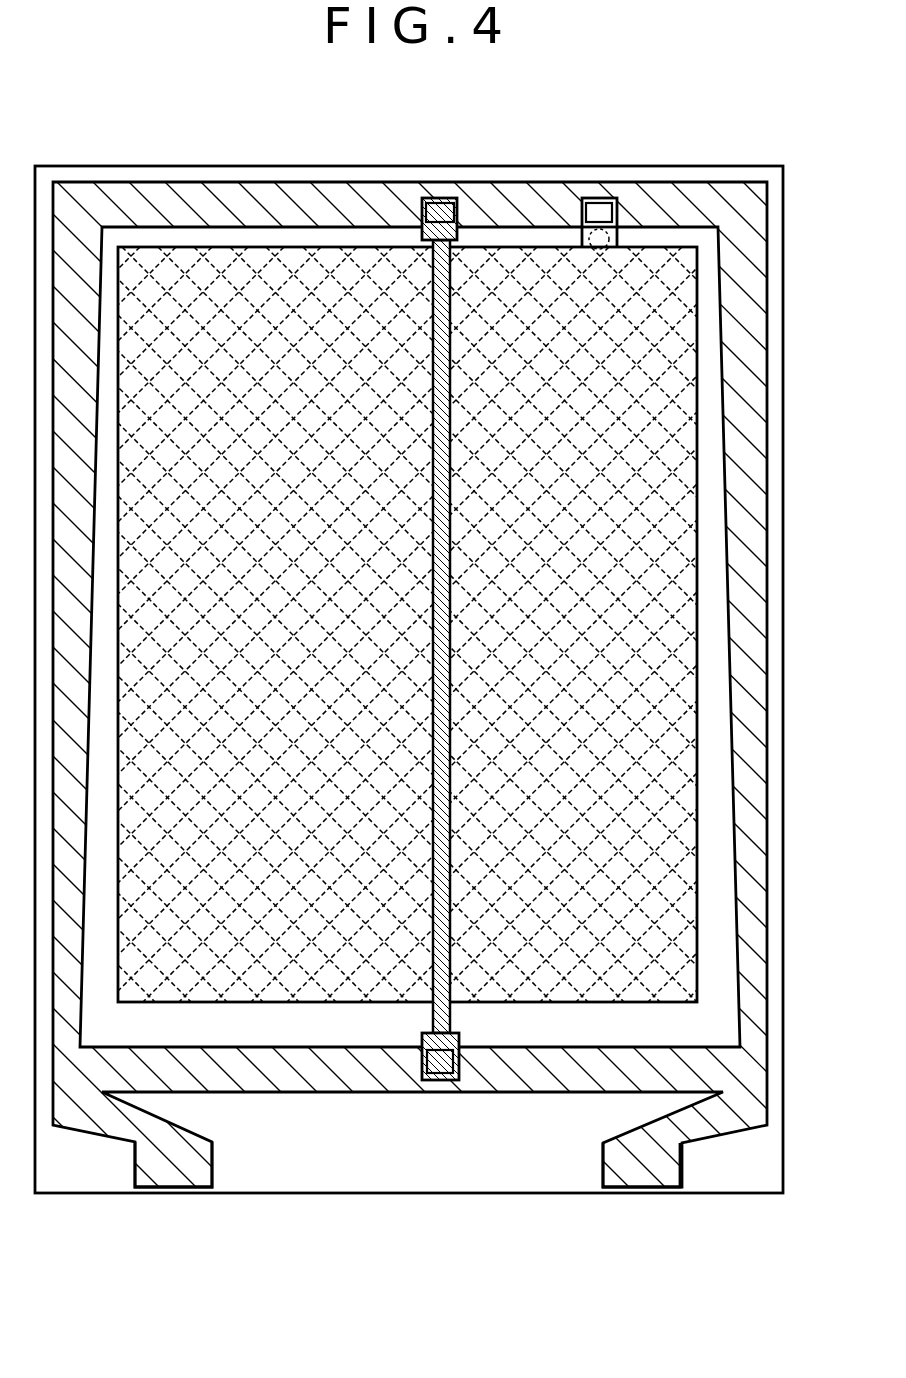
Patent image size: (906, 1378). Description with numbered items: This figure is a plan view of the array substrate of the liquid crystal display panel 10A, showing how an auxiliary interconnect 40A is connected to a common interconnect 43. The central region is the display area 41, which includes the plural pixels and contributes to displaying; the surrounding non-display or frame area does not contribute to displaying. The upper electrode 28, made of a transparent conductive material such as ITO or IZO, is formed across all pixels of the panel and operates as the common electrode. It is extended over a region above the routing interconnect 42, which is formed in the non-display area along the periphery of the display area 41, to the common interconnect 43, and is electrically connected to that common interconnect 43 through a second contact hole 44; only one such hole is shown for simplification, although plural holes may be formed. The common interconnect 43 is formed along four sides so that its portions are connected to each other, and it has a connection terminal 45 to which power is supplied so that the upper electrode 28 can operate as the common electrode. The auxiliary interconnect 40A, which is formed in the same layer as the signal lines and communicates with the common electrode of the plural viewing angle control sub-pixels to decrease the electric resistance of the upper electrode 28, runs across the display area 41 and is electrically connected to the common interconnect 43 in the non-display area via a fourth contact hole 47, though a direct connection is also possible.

The liquid crystal display panel 10A is at (103, 99).
The upper electrode 28 is at (228, 278).
The routing interconnect 42 is at (283, 240).
The common interconnect 43 is at (357, 210).
The fourth contact hole 47 is at (437, 197).
The auxiliary interconnect 40A is at (452, 248).
The second contact hole 44 is at (600, 217).
The display area 41 is at (600, 248).
The connection terminal 45 is at (178, 1165).